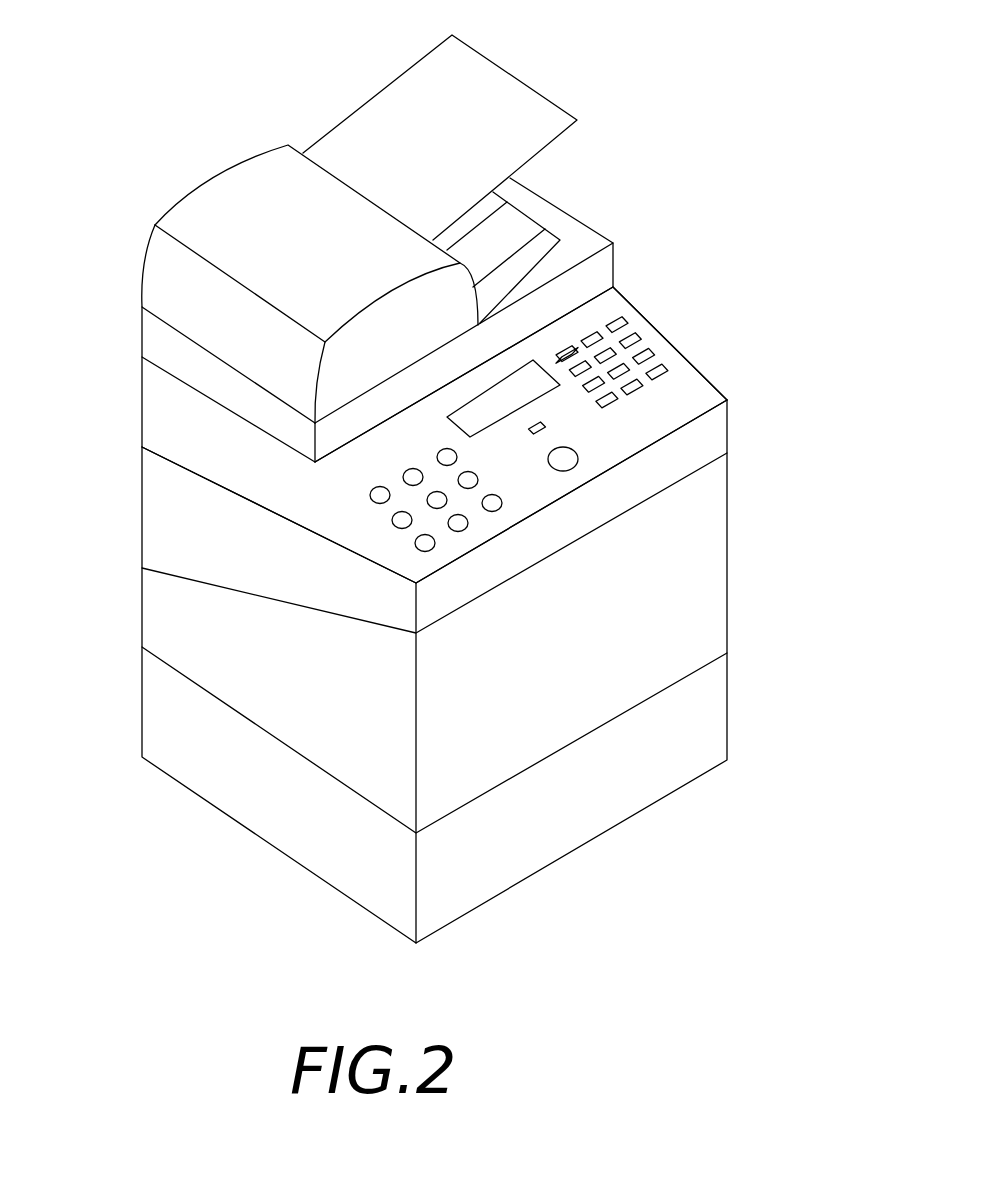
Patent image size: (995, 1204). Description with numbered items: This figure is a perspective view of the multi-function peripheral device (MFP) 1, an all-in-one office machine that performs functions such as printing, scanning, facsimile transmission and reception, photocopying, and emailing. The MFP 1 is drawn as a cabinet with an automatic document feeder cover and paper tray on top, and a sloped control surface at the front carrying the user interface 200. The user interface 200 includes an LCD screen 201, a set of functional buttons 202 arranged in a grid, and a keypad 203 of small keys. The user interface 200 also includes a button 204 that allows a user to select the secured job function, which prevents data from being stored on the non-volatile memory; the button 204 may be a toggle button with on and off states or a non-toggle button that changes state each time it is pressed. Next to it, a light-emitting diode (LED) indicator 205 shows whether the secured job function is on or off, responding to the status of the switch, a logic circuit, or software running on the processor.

The multi-function peripheral device (MFP) 1 is at (655, 133).
The user interface 200 is at (757, 233).
The LCD screen 201 is at (526, 387).
The functional buttons 202 is at (403, 520).
The keypad 203 is at (633, 338).
The button 204 is at (566, 462).
The light-emitting diode (LED) indicator 205 is at (541, 428).